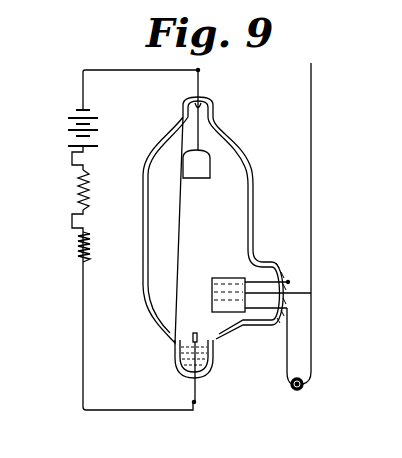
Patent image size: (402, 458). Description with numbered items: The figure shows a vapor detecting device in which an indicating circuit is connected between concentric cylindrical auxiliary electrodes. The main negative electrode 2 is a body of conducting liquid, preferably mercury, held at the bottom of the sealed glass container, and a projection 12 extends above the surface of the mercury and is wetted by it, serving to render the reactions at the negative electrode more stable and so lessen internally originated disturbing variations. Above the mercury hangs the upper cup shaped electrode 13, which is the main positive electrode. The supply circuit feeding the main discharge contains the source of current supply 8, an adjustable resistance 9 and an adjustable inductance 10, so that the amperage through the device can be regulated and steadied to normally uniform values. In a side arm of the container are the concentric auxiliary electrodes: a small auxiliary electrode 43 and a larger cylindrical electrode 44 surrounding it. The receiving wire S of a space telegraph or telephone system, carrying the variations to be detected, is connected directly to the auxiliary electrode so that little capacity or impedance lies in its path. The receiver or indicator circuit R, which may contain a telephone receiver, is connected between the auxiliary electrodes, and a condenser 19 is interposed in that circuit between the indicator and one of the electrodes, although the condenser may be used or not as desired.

The negative electrode 2 is at (181, 356).
The source of current supply 8 is at (74, 140).
The adjustable resistance 9 is at (71, 201).
The adjustable inductance 10 is at (69, 247).
The projection 12 is at (166, 335).
The upper cup shaped electrode 13 is at (196, 124).
The condenser 19 is at (302, 347).
The small auxiliary electrode 43 is at (212, 295).
The larger cylindrical electrode 44 is at (222, 278).
The receiving wire S is at (311, 147).
The indicator circuit R is at (295, 357).